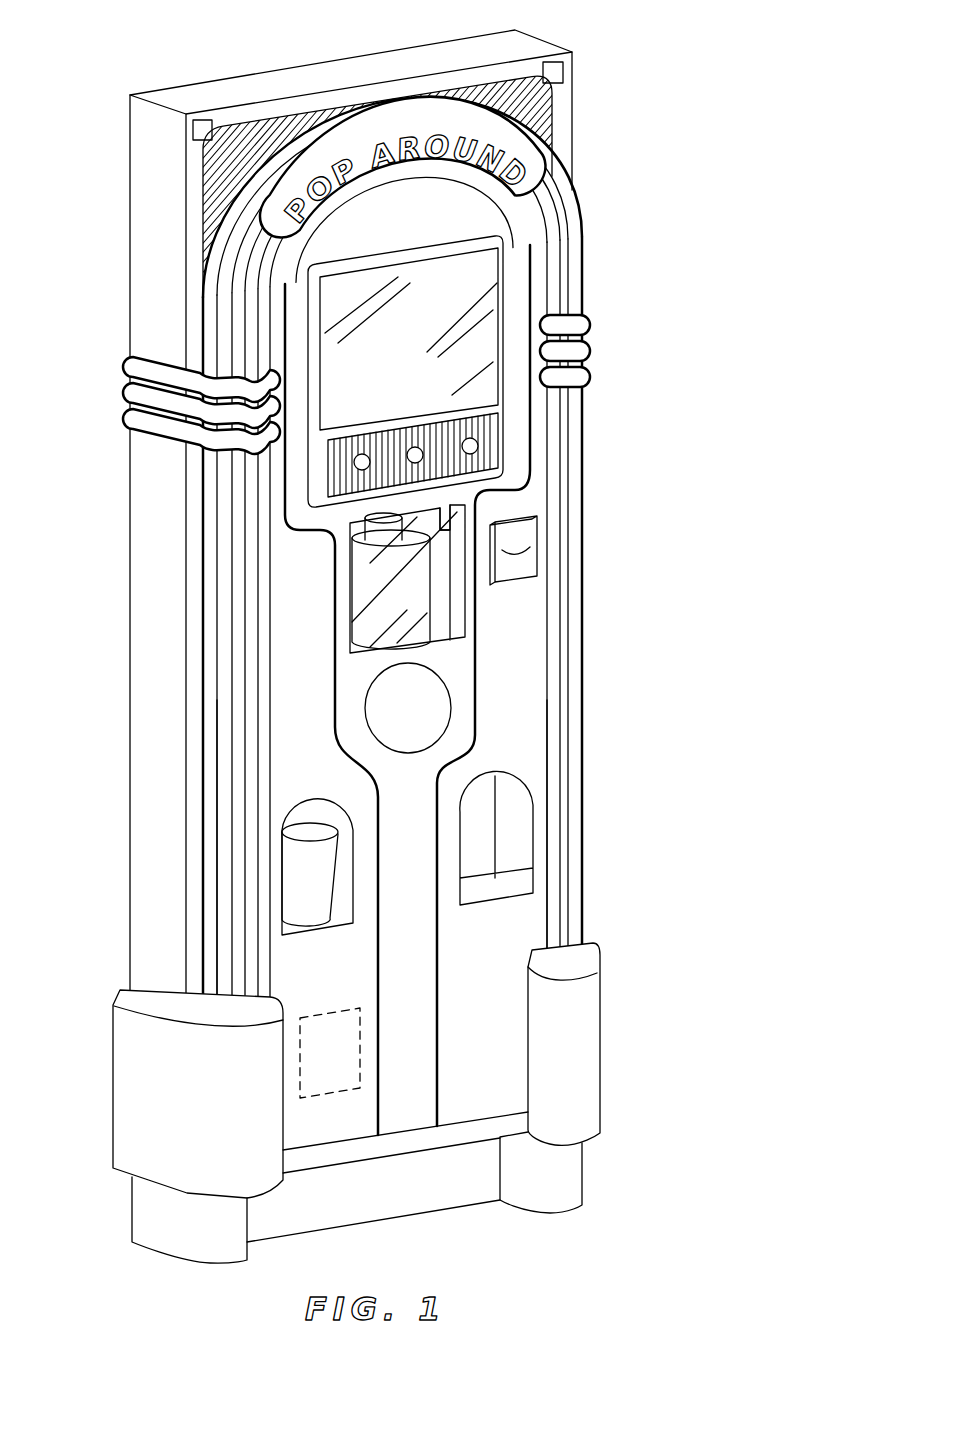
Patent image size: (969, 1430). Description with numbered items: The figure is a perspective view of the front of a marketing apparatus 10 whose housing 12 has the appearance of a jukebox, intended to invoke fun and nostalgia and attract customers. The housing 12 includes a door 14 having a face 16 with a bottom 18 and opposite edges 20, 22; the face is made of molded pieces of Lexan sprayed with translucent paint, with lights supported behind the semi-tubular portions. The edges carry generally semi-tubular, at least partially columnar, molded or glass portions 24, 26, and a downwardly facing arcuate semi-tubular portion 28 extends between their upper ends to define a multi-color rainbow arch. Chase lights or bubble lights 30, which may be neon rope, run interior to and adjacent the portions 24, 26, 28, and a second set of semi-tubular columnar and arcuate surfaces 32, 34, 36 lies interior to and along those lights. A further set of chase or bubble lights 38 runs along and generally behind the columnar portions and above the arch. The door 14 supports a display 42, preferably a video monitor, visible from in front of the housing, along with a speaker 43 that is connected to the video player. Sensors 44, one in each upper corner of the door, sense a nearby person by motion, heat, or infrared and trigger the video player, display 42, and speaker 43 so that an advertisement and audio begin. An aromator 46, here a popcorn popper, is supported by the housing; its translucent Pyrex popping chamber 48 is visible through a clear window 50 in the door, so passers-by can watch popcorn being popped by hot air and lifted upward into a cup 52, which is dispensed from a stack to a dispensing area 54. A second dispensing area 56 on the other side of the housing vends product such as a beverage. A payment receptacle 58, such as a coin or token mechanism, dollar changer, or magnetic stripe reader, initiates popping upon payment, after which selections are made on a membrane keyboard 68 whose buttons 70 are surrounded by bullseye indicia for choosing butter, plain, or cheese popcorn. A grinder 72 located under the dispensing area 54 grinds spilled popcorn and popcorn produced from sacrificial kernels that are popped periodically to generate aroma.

The marketing apparatus 10 is at (651, 691).
The housing 12 is at (155, 750).
The door 14 is at (160, 240).
The face 16 is at (485, 1010).
The bottom 18 is at (420, 1218).
The edge 20 is at (155, 585).
The edge 22 is at (583, 722).
The semi-tubular columnar portion 24 is at (230, 528).
The semi-tubular columnar portion 26 is at (578, 580).
The arcuate semi-tubular portion 28 is at (230, 318).
The chase lights or bubble lights 30 is at (565, 445).
The semi-tubular columnar surface 32 is at (265, 812).
The semi-tubular arcuate surface 34 is at (548, 238).
The semi-tubular columnar surface 36 is at (553, 905).
The chase lights or bubble lights 38 is at (384, 105).
The display 42 is at (425, 295).
The speaker 43 is at (422, 713).
The sensor 44 is at (193, 133).
The aromator 46 is at (448, 610).
The popping chamber 48 is at (385, 595).
The window 50 is at (455, 518).
The cup 52 is at (310, 858).
The dispensing area 54 is at (345, 893).
The dispensing area 56 is at (520, 828).
The payment receptacle 58 is at (520, 545).
The keyboard 68 is at (360, 458).
The buttons 70 is at (417, 450).
The grinder 72 is at (300, 1080).